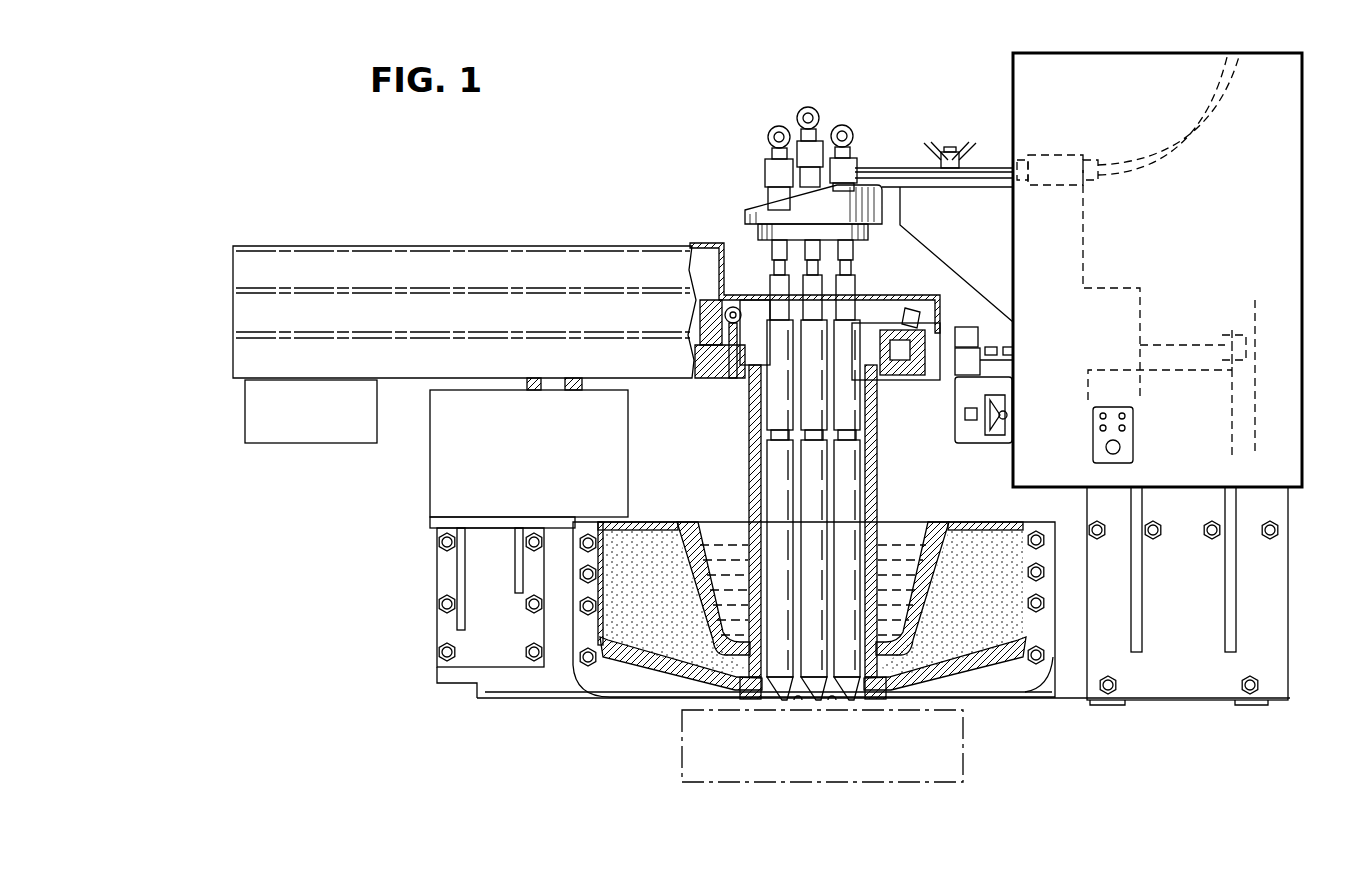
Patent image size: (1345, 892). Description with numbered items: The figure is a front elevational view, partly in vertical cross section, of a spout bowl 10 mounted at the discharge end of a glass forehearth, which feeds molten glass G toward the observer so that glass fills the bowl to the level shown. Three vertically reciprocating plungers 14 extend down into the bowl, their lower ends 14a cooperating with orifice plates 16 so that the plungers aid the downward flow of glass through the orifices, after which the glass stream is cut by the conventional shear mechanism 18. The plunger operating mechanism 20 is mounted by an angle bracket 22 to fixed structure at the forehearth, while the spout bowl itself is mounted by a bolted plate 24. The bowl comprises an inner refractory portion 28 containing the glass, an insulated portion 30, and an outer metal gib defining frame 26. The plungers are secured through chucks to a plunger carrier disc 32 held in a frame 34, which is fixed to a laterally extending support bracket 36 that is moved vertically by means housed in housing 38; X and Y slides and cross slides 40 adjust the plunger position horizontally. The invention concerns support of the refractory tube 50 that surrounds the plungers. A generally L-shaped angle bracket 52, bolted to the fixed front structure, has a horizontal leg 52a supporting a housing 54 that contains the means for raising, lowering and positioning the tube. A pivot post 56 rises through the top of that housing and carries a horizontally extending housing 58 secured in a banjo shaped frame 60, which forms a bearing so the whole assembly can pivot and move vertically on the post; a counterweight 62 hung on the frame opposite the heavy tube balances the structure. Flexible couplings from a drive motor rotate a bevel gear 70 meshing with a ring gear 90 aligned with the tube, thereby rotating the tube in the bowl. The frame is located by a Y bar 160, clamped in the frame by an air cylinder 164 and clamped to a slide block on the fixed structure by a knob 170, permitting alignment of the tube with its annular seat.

The spout bowl 10 is at (652, 667).
The plunger 14 is at (843, 505).
The lower end of plunger 14a is at (792, 700).
The orifice plate 16 is at (468, 710).
The shear mechanism 18 is at (948, 760).
The plunger operating mechanism 20 is at (994, 99).
The angle bracket 22 is at (1270, 618).
The plate 24 is at (603, 617).
The metal gib defining frame 26 is at (590, 520).
The inner refractory portion 28 is at (927, 583).
The insulated portion 30 is at (993, 620).
The plunger carrier disc 32 is at (758, 230).
The frame 34 is at (770, 212).
The support bracket 36 is at (975, 226).
The housing 38 is at (1265, 202).
The X and Y slides and cross slides 40 is at (1128, 450).
The refractory tube 50 is at (748, 428).
The angle bracket 52 is at (456, 672).
The horizontally extending leg 52a is at (488, 537).
The housing 54 is at (450, 470).
The pivot post 56 is at (558, 385).
The horizontally extending housing 58 is at (456, 238).
The banjo shaped frame 60 is at (700, 378).
The counterweight 62 is at (318, 432).
The bevel gear 70 is at (691, 262).
The ring gear 90 is at (913, 320).
The Y bar 160 is at (968, 333).
The air cylinder 164 is at (968, 356).
The knob 170 is at (1002, 364).
The glass G is at (720, 543).